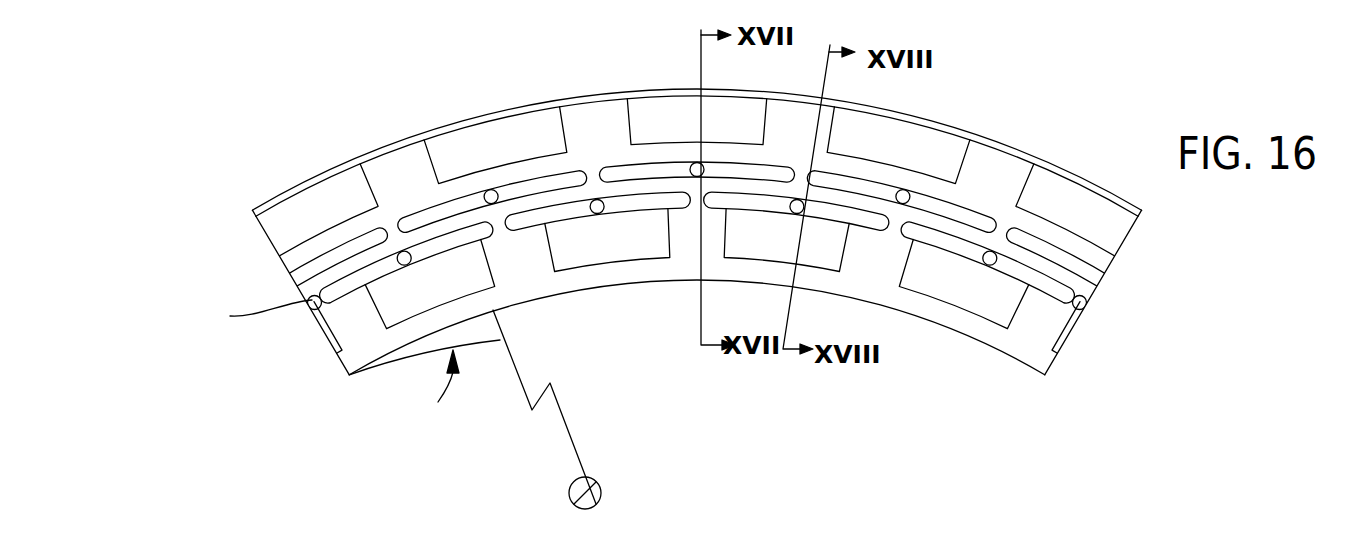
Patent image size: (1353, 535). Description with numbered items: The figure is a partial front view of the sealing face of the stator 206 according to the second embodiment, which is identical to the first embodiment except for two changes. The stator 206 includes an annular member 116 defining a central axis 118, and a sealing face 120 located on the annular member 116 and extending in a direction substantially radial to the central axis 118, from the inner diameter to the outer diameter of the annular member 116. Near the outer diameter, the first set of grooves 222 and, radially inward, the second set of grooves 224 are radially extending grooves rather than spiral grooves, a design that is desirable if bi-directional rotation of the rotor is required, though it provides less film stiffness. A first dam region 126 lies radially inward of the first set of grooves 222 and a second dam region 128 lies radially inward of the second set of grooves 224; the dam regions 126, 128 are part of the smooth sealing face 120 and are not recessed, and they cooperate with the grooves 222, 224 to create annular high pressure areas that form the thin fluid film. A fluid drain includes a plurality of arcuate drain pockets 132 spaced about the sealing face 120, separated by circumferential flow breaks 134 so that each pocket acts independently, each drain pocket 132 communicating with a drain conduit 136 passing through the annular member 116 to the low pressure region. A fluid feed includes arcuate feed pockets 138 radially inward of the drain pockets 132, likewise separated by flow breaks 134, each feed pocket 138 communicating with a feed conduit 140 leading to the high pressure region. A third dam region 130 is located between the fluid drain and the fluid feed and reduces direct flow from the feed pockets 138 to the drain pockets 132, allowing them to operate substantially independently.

The annular member 116 is at (383, 357).
The central axis 118 is at (568, 489).
The sealing face 120 is at (585, 287).
The first dam region 126 is at (283, 259).
The second dam region 128 is at (352, 358).
The third dam region 130 is at (247, 301).
The arcuate drain pockets 132 is at (1020, 217).
The circumferential flow breaks 134 is at (1087, 303).
The drain conduit 136 is at (493, 190).
The arcuate feed pockets 138 is at (884, 230).
The feed conduit 140 is at (597, 212).
The stator 206 is at (432, 391).
The first set of grooves 222 is at (433, 135).
The second set of grooves 224 is at (968, 303).